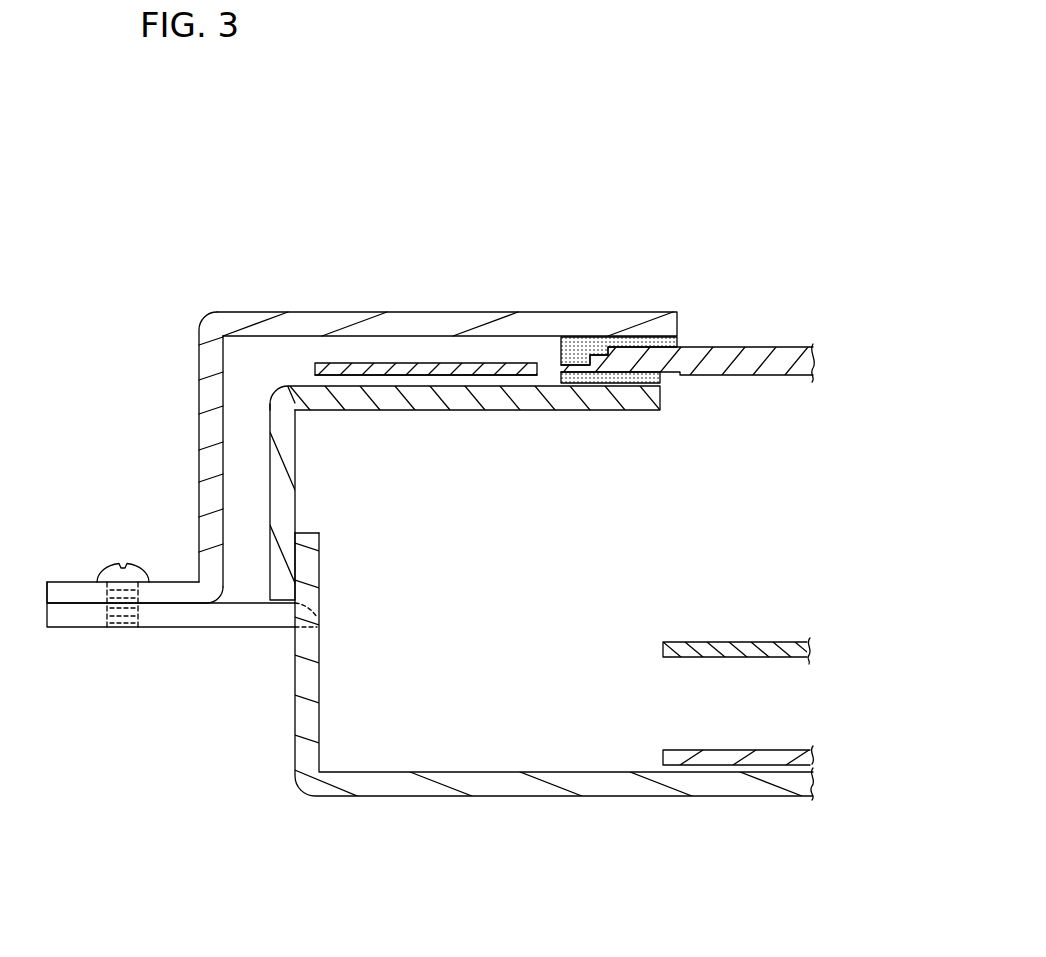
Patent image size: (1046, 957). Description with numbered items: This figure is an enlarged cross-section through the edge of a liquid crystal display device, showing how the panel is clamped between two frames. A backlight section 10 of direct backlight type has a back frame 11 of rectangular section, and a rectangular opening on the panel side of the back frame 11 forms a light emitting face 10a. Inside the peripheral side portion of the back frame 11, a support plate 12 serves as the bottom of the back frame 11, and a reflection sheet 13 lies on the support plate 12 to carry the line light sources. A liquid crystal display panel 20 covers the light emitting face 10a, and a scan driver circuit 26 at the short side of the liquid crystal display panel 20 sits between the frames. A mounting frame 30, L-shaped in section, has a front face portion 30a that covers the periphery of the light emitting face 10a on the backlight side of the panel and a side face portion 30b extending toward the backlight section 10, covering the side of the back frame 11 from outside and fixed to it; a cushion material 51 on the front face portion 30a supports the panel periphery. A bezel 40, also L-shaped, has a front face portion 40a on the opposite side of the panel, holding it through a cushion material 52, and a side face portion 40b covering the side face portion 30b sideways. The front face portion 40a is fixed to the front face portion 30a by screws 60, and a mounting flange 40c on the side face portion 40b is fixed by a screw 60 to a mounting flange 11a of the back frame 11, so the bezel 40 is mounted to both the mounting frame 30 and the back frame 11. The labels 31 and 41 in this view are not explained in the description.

The backlight section 10 is at (294, 681).
The light emitting face 10a is at (702, 520).
The back frame 11 is at (295, 720).
The mounting flange 11a is at (78, 630).
The support plate 12 is at (790, 749).
The reflection sheet 13 is at (790, 641).
The liquid crystal display panel 20 is at (775, 347).
The scan driver circuit 26 is at (378, 363).
The mounting frame 30 is at (100, 407).
The front face portion 30a is at (307, 383).
The side face portion 30b is at (270, 447).
The insulating sheet 31 is at (443, 383).
The bezel 40 is at (283, 234).
The front face portion 40a is at (268, 312).
The side face portion 40b is at (199, 385).
The mounting flange 40c is at (70, 582).
The cover body 41 is at (512, 312).
The cushion material 51 is at (661, 375).
The cushion material 52 is at (678, 342).
The screw 60 is at (117, 567).